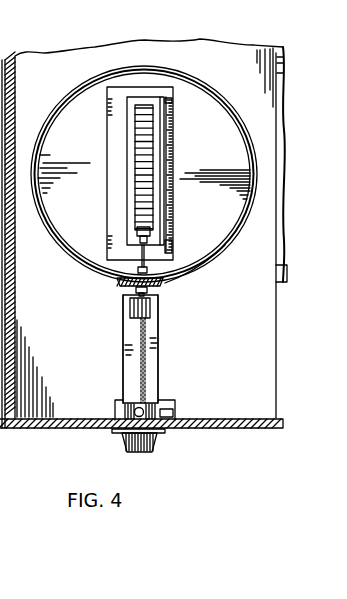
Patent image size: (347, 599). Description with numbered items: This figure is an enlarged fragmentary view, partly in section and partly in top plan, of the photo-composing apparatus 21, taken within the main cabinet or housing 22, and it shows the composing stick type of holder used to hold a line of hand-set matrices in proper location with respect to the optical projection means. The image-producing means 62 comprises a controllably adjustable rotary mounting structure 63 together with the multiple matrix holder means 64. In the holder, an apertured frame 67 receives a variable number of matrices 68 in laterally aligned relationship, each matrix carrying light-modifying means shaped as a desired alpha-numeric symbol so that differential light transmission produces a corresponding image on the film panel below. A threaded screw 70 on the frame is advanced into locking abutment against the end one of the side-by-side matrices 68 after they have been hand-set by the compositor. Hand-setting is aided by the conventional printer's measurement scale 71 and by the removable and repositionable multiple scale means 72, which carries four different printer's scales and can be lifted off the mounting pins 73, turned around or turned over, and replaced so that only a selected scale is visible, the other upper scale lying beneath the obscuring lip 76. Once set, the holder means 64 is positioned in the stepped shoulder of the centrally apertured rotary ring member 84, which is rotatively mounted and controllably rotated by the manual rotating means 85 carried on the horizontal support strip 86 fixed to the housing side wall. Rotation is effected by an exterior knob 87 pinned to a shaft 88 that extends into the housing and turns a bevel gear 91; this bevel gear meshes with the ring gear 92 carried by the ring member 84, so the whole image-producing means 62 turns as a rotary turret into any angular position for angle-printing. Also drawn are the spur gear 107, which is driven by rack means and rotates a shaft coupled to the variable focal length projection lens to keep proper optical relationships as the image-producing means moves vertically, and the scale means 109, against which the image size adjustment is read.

The photo-composing apparatus 21 is at (219, 447).
The main cabinet or housing 22 is at (42, 431).
The image-producing means 62 is at (257, 145).
The rotary mounting structure 63 is at (223, 191).
The multiple matrix holder means 64 is at (173, 132).
The apertured frame 67 is at (158, 235).
The matrices 68 is at (151, 168).
The threaded screw 70 is at (118, 281).
The printer's measurement scale 71 is at (113, 208).
The multiple scale means 72 is at (173, 207).
The mounting pins 73 is at (168, 100).
The obscuring lip 76 is at (164, 197).
The rotary ring member 84 is at (203, 98).
The manual rotating means 85 is at (100, 347).
The horizontal support strip 86 is at (153, 331).
The exterior knob 87 is at (157, 442).
The shaft 88 is at (146, 366).
The bevel gear 91 is at (120, 291).
The ring gear 92 is at (196, 272).
The spur gear 107 is at (174, 414).
The scale means 109 is at (114, 433).